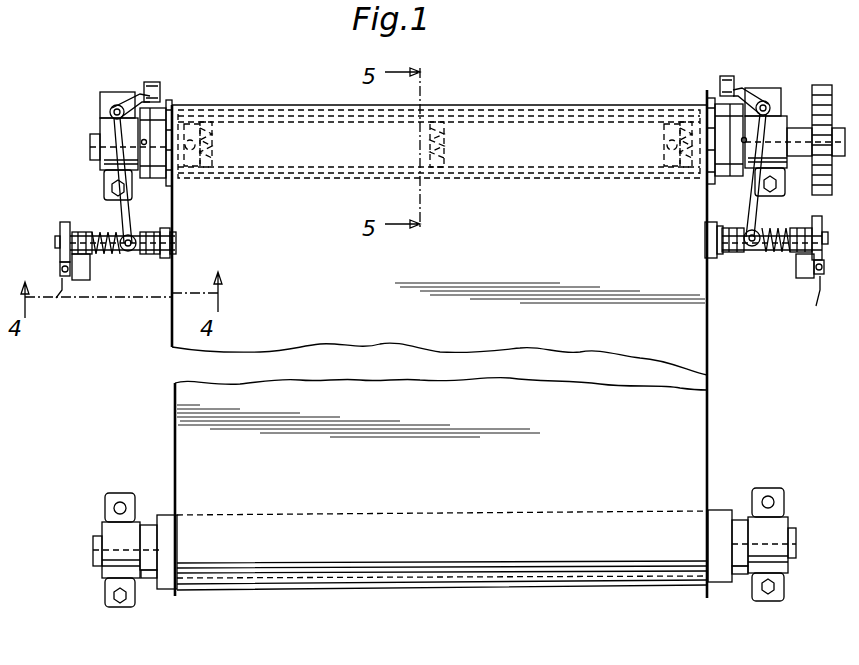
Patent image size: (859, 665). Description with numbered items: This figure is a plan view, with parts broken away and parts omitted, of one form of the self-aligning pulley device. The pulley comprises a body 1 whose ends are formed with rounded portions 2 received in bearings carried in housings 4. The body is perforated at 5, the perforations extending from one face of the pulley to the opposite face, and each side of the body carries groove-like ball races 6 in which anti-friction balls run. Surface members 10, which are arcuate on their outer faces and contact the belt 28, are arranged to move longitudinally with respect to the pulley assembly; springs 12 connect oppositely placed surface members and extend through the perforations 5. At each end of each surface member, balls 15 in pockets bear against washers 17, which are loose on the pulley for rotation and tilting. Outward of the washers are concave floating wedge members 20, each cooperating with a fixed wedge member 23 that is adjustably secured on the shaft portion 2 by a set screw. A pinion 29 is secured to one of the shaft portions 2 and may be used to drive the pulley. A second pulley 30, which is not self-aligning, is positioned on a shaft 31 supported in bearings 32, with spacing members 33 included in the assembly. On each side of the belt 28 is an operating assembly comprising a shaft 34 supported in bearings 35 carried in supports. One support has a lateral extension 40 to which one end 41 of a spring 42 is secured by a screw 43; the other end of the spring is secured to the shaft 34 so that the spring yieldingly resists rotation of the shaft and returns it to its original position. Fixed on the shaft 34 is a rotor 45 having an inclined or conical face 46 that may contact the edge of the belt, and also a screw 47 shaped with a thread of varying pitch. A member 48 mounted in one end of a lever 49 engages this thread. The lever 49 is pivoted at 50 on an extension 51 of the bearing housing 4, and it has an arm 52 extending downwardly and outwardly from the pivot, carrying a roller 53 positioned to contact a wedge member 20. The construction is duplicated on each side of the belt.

The body 1 is at (292, 128).
The rounded portions 2 is at (90, 149).
The housings 4 is at (104, 176).
The perforations 5 is at (205, 145).
The ball races 6 is at (8, 162).
The surface members 10 is at (325, 116).
The springs 12 is at (210, 130).
The balls 15 is at (690, 122).
The washers 17 is at (172, 104).
The concave floating wedge members 20 is at (160, 112).
The fixed wedge member 23 is at (146, 178).
The belt 28 is at (450, 338).
The pinion 29 is at (822, 86).
The pulley 30 is at (720, 512).
The shaft 31 is at (93, 552).
The bearings 32 is at (102, 530).
The spacing members 33 is at (150, 580).
The shaft 34 is at (55, 242).
The bearings 35 is at (86, 224).
The lateral extension 40 is at (82, 280).
The end of spring 41 is at (60, 268).
The spring 42 is at (60, 229).
The screw 43 is at (429, 301).
The rotor 45 is at (160, 260).
The inclined or conical face 46 is at (170, 258).
The screw 47 is at (100, 252).
The member 48 is at (126, 252).
The lever 49 is at (108, 202).
The pivot 50 is at (108, 104).
The extension 51 is at (110, 110).
The arm or extension 52 is at (132, 98).
The roller 53 is at (154, 84).